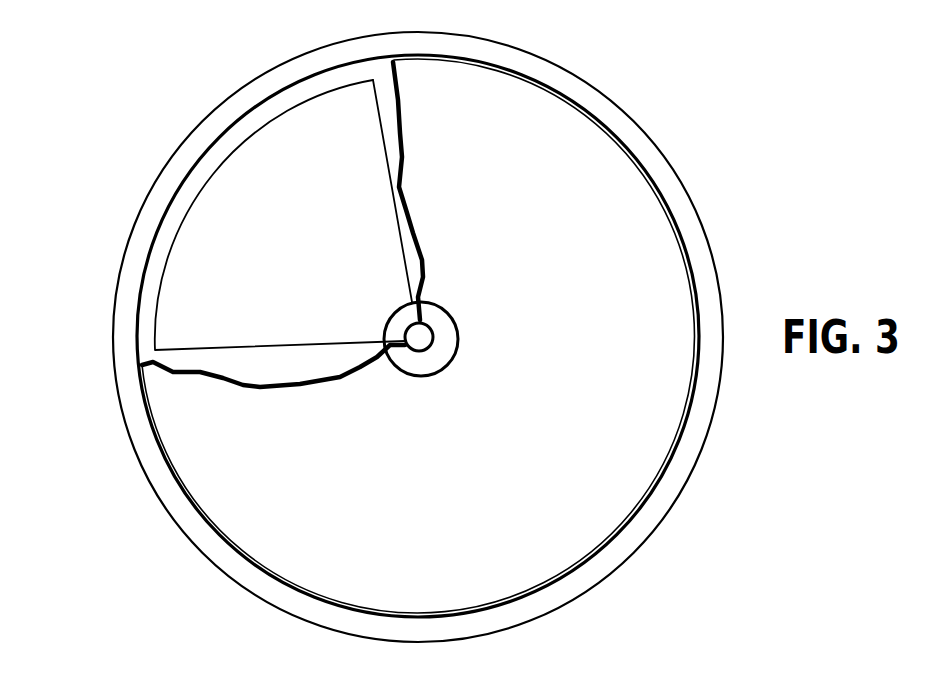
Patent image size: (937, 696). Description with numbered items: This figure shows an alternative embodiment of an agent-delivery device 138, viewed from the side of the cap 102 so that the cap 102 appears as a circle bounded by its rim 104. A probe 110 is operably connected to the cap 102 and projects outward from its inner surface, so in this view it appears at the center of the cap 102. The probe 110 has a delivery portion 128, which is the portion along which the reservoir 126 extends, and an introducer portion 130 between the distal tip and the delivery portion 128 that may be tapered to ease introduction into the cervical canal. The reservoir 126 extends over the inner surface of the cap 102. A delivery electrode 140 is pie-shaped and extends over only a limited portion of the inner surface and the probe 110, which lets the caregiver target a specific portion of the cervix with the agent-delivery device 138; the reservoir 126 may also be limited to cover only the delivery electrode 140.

The cap 102 is at (697, 208).
The rim 104 is at (693, 475).
The probe 110 is at (433, 340).
The reservoir 126 is at (545, 93).
The delivery portion 128 is at (435, 302).
The introducer portion 130 is at (419, 351).
The agent-delivery device 138 is at (115, 583).
The delivery electrode 140 is at (163, 281).